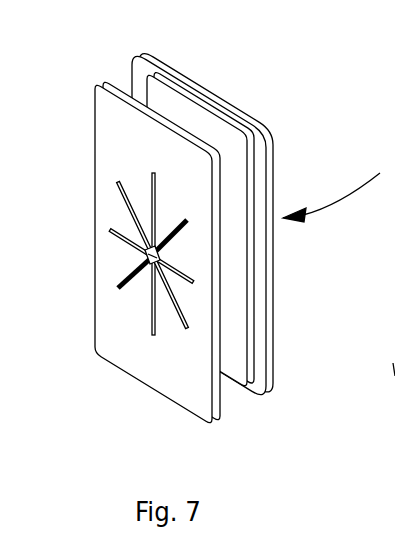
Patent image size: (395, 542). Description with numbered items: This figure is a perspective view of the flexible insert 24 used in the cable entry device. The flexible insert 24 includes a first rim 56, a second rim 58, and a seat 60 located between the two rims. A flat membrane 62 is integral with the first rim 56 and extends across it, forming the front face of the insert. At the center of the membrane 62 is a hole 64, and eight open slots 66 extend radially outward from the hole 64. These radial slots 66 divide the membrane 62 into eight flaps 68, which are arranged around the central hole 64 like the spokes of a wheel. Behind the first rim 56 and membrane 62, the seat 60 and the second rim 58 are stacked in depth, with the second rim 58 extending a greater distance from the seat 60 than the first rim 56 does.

The flexible insert 24 is at (394, 46).
The first rim 56 is at (102, 82).
The second rim 58 is at (202, 84).
The seat 60 is at (210, 130).
The membrane 62 is at (159, 158).
The hole 64 is at (162, 257).
The open slots 66 is at (131, 213).
The flaps 68 is at (137, 292).